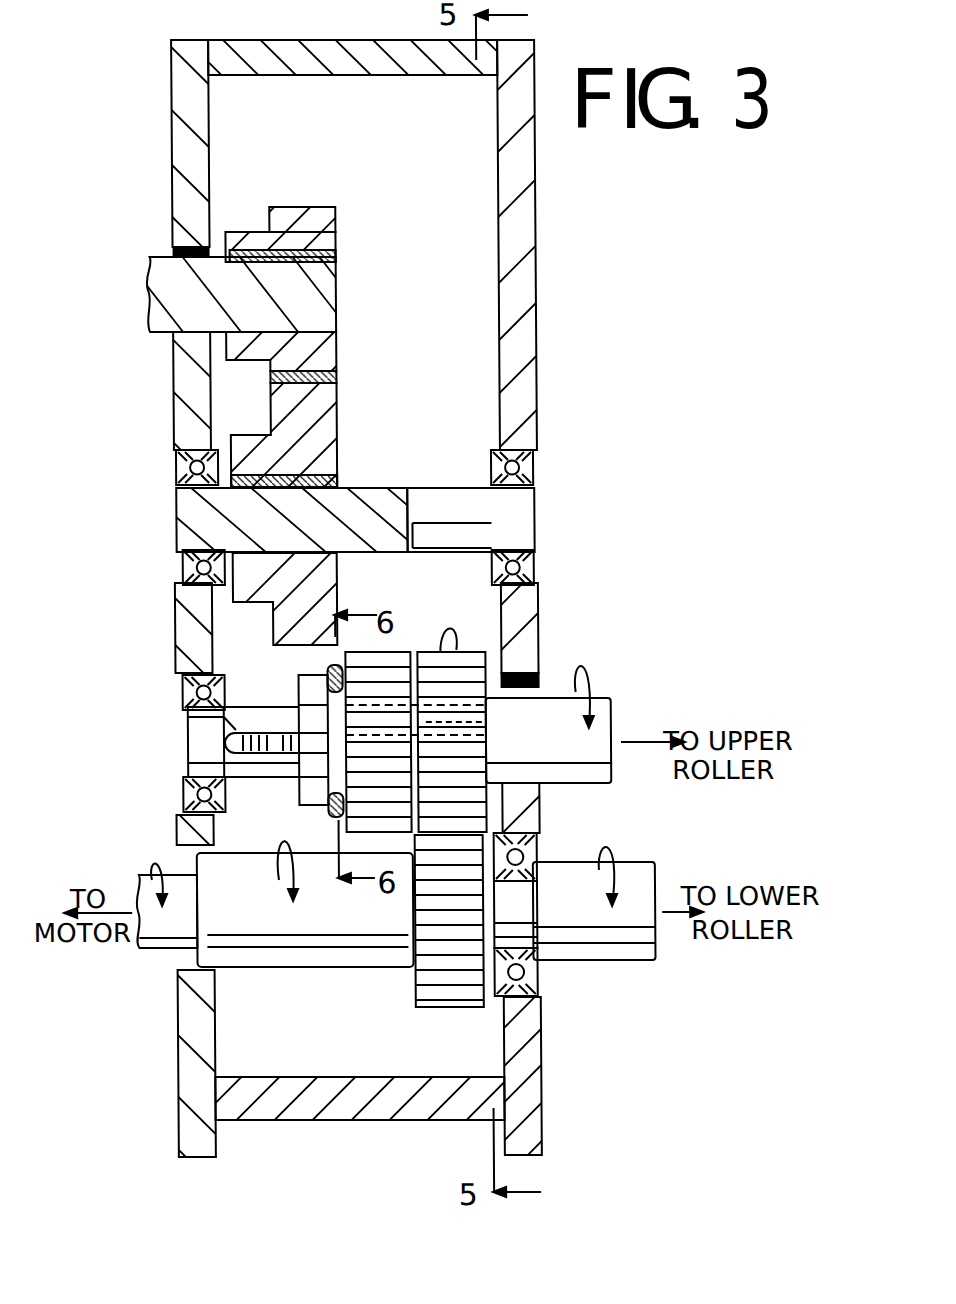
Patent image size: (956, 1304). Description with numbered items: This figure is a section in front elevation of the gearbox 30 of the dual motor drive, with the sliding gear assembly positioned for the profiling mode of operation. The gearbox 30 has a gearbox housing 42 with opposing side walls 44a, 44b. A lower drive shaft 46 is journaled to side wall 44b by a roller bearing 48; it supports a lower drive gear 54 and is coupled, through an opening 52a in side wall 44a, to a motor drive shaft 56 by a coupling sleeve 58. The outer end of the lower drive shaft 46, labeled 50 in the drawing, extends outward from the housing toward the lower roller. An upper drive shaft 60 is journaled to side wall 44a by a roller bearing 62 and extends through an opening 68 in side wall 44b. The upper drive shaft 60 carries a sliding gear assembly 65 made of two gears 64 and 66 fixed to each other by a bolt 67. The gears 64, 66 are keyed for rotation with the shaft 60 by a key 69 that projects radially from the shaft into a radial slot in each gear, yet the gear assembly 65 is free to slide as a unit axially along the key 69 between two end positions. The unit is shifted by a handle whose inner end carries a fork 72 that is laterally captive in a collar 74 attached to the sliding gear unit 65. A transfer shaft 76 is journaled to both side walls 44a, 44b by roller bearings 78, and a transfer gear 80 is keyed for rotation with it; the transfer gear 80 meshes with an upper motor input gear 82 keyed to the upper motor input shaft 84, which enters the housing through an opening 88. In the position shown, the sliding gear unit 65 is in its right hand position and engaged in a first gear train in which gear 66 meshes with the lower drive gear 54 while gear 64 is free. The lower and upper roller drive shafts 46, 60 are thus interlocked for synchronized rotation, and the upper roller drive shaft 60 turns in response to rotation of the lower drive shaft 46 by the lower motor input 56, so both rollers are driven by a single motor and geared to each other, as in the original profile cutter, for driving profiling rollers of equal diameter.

The gearbox 30 is at (616, 375).
The gearbox housing 42 is at (536, 279).
The side wall 44a is at (183, 412).
The side wall 44b is at (527, 338).
The lower drive shaft 46 is at (555, 953).
The roller bearing 48 is at (537, 835).
The output shaft end 50 is at (633, 867).
The opening 52a is at (182, 972).
The lower drive gear 54 is at (422, 1010).
The motor drive shaft 56 is at (160, 955).
The coupling sleeve 58 is at (257, 960).
The upper drive shaft 60 is at (253, 767).
The roller bearing 62 is at (182, 782).
The gear 64 is at (328, 642).
The sliding gear assembly 65 is at (428, 646).
The gear 66 is at (497, 650).
The bolt 67 is at (486, 722).
The opening 68 is at (537, 668).
The key 69 is at (223, 728).
The fork 72 is at (330, 830).
The collar 74 is at (297, 717).
The transfer shaft 76 is at (461, 488).
The roller bearings 78 is at (188, 478).
The transfer gear 80 is at (338, 433).
The upper motor input gear 82 is at (345, 228).
The upper motor input shaft 84 is at (165, 307).
The opening 88 is at (192, 256).